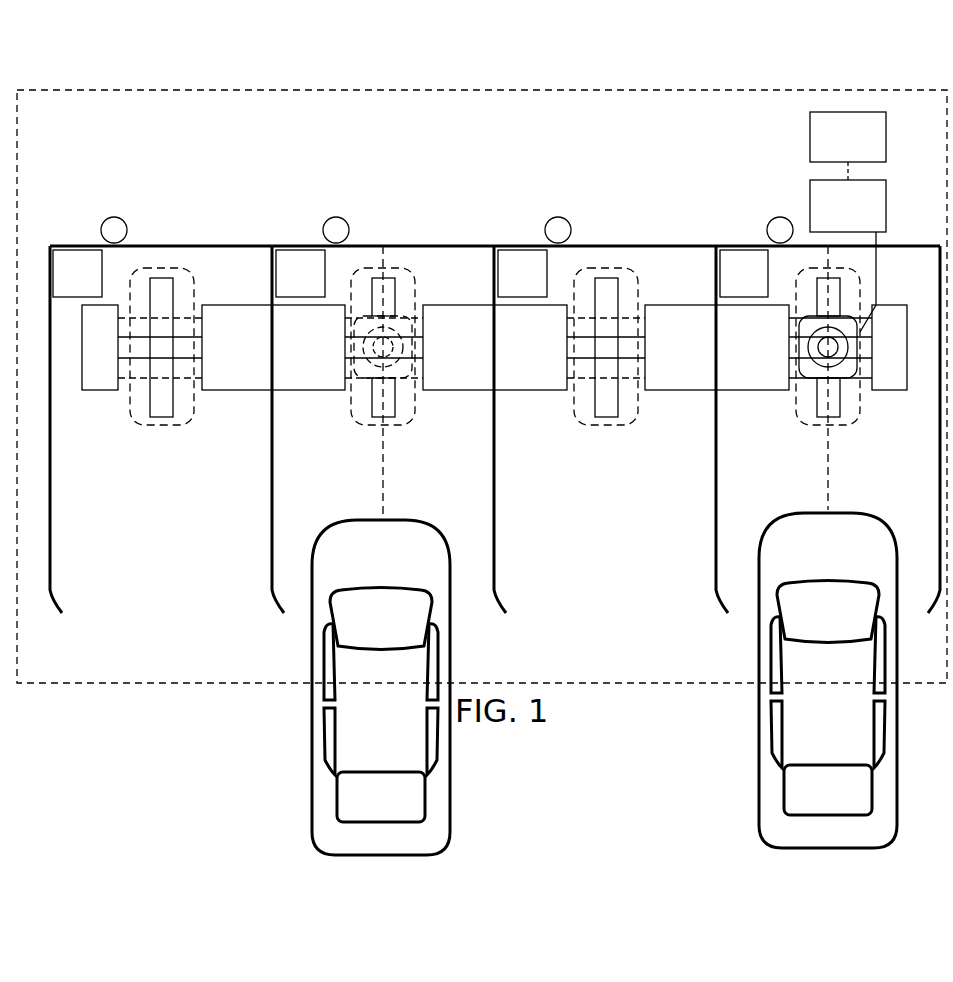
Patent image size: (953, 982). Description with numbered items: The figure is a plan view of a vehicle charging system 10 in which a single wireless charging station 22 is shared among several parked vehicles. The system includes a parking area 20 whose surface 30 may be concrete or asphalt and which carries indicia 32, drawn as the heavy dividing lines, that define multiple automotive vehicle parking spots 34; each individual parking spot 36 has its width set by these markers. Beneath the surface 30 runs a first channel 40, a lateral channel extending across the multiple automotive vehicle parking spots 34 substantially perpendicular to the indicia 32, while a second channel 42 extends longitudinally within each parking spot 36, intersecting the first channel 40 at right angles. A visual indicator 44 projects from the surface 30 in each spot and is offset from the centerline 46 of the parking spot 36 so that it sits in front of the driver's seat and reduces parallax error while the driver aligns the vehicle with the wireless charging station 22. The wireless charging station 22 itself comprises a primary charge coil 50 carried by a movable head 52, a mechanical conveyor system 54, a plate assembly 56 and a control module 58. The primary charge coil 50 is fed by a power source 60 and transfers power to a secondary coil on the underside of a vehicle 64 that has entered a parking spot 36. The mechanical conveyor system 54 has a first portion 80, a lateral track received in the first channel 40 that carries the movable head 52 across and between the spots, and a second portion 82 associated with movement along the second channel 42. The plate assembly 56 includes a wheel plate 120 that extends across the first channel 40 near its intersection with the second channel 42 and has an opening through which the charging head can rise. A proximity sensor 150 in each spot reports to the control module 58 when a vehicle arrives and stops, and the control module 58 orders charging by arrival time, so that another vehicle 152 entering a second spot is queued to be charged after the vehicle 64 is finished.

The vehicle charging system 10 is at (92, 82).
The parking area 20 is at (688, 90).
The wireless charging station 22 is at (884, 279).
The surface 30 is at (672, 180).
The indicia 32 is at (495, 443).
The multiple automotive vehicle parking spots 34 is at (138, 607).
The parking spot 36 is at (110, 524).
The first channel 40 is at (194, 392).
The second channel 42 is at (163, 425).
The visual indicator 44 is at (127, 228).
The centerline 46 is at (385, 505).
The primary charge coil 50 is at (375, 372).
The movable head 52 is at (379, 358).
The mechanical conveyor system 54 is at (868, 330).
The plate assembly 56 is at (74, 374).
The control module 58 is at (839, 216).
The power source 60 is at (839, 147).
The vehicle 64 is at (888, 577).
The first portion 80 is at (124, 378).
The second portion 82 is at (173, 290).
The wheel plate 120 is at (88, 392).
The proximity sensor 150 is at (64, 283).
The another vehicle 152 is at (452, 642).